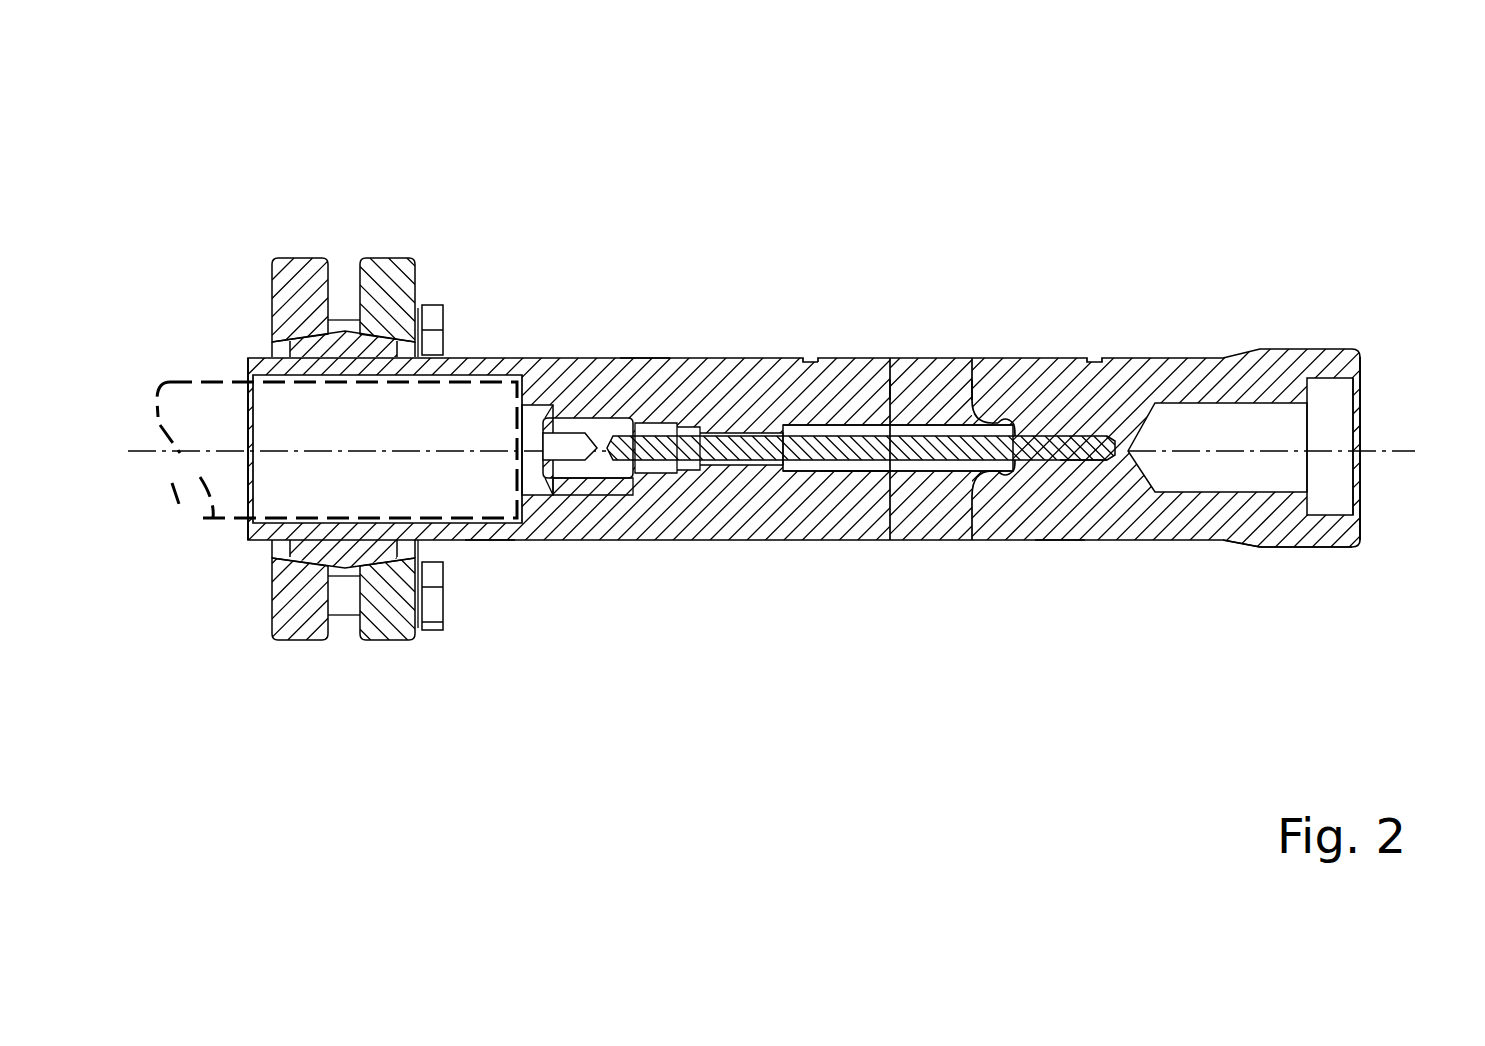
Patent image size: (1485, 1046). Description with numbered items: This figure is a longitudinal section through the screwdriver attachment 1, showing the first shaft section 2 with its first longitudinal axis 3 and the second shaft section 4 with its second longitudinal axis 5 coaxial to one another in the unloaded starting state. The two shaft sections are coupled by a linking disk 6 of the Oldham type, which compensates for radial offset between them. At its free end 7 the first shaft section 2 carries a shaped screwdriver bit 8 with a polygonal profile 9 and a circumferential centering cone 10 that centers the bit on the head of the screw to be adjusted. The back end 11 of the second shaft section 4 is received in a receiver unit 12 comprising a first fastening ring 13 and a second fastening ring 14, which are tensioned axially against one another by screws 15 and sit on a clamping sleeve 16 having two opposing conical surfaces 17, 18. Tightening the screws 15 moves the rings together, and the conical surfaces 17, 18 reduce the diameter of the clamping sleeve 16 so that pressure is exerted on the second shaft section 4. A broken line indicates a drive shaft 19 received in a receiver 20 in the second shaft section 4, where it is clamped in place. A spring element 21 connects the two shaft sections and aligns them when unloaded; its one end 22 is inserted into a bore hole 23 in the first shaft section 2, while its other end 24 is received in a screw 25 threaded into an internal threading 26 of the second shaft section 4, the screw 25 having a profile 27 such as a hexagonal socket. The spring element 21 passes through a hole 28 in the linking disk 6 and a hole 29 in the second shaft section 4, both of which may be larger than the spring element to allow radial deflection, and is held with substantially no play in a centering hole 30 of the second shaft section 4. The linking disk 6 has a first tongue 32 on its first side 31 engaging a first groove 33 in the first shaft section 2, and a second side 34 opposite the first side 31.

The screwdriver attachment 1 is at (777, 622).
The first shaft section 2 is at (1096, 335).
The first longitudinal axis 3 is at (1380, 445).
The second shaft section 4 is at (672, 335).
The second longitudinal axis 5 is at (152, 452).
The linking disk 6 is at (927, 357).
The free end 7 is at (1283, 578).
The screwdriver bit 8 is at (1347, 547).
The polygonal profile 9 is at (1313, 513).
The centering cone 10 is at (1358, 520).
The back end 11 is at (253, 347).
The receiver unit 12 is at (365, 415).
The first fastening ring 13 is at (293, 270).
The second fastening ring 14 is at (395, 265).
The screws 15 is at (443, 316).
The clamping sleeve 16 is at (350, 558).
The conical surface 17 is at (305, 562).
The conical surface 18 is at (378, 566).
The drive shaft 19 is at (212, 523).
The receiver 20 is at (488, 547).
The spring element 21 is at (825, 466).
The one end of the spring element 22 is at (1058, 540).
The bore hole 23 is at (1088, 464).
The other end of the spring element 24 is at (645, 357).
The screw 25 is at (607, 468).
The internal threading 26 is at (585, 481).
The profile 27 is at (538, 357).
The hole 28 is at (930, 471).
The hole 29 is at (850, 470).
The centering hole 30 is at (728, 468).
The first side 31 is at (975, 390).
The first tongue 32 is at (1010, 412).
The first groove 33 is at (1020, 474).
The second side 34 is at (888, 390).